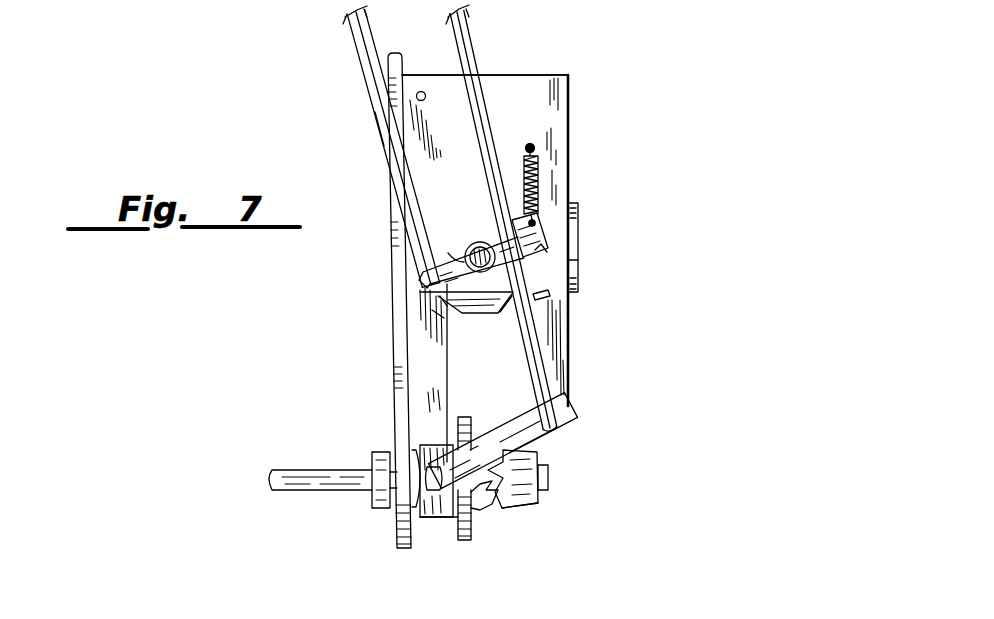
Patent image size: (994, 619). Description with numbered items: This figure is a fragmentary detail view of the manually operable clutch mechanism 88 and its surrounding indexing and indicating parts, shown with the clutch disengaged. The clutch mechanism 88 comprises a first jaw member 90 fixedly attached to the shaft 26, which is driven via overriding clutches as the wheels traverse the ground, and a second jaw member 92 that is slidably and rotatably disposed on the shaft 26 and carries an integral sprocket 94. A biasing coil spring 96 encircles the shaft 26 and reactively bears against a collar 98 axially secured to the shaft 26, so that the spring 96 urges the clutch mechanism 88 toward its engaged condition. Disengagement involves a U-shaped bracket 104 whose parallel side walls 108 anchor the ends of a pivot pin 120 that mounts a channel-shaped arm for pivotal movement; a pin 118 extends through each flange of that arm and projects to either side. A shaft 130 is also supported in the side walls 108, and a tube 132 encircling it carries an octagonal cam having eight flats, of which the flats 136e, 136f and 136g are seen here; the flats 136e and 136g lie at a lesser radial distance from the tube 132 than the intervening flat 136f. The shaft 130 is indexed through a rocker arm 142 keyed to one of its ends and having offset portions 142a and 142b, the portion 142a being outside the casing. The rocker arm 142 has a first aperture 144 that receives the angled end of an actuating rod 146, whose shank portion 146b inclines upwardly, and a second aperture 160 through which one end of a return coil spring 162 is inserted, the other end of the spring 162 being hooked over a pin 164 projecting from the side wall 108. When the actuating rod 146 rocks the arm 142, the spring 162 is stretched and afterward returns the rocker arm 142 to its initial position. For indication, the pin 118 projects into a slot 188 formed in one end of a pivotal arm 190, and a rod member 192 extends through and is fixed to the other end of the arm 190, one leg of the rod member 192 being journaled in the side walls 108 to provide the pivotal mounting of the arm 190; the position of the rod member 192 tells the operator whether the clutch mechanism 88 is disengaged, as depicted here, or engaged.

The shaft 26 is at (285, 472).
The clutch mechanism 88 is at (536, 519).
The first jaw member 90 is at (540, 497).
The second jaw member 92 is at (462, 541).
The sprocket 94 is at (476, 527).
The biasing coil spring 96 is at (392, 522).
The collar 98 is at (368, 505).
The U-shaped bracket 104 is at (514, 66).
The side walls 108 is at (548, 92).
The pin 118 is at (437, 512).
The pivot pin 120 is at (421, 90).
The shaft 130 is at (481, 243).
The tube 132 is at (448, 253).
The cam flat 136e is at (497, 317).
The cam flat 136f is at (470, 318).
The cam flat 136g is at (447, 328).
The rocker arm 142 is at (556, 239).
The offset portion 142a is at (440, 313).
The offset portion 142b is at (579, 271).
The first aperture 144 is at (428, 282).
The actuating rod 146 is at (362, 81).
The shank portion 146b is at (381, 112).
The aperture 160 is at (537, 222).
The return coil spring 162 is at (538, 177).
The pin 164 is at (535, 147).
The slot 188 is at (434, 465).
The pivotal arm 190 is at (543, 432).
The rod member 192 is at (556, 369).